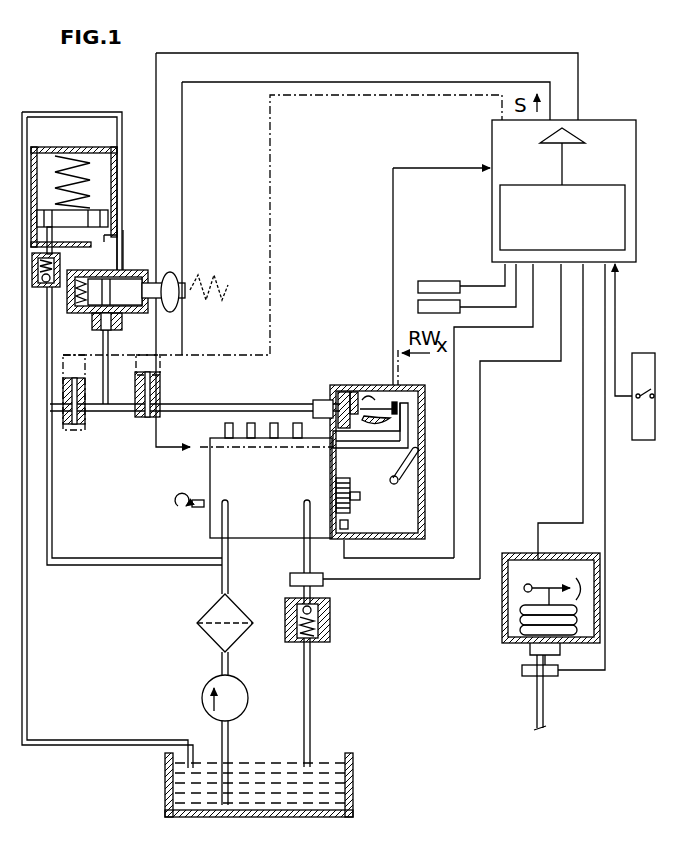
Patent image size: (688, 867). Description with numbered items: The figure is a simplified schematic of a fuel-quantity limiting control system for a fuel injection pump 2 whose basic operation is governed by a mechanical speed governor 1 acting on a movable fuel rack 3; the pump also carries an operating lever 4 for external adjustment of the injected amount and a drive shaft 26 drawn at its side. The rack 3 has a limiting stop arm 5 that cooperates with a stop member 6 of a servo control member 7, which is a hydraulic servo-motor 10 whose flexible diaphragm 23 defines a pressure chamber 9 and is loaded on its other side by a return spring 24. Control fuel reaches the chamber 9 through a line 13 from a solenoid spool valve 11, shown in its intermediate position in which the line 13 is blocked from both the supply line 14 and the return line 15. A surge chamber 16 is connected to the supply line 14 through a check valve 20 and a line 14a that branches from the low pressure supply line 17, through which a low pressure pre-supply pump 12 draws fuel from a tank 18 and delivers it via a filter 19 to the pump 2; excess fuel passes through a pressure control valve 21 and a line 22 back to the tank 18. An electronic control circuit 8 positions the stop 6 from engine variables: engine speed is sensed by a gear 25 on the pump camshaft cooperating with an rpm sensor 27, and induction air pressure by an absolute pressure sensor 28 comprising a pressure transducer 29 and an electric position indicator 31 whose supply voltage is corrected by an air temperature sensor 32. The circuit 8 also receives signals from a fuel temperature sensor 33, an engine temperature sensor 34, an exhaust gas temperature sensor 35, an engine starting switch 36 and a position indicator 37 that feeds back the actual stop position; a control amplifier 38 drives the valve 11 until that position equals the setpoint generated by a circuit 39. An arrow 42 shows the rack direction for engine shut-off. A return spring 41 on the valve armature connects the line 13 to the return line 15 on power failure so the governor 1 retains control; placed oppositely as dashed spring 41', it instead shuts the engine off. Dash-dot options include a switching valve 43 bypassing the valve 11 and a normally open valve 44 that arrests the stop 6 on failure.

The mechanical speed governor 1 is at (396, 520).
The fuel injection pump 2 is at (266, 501).
The fuel rack 3 is at (349, 450).
The operating lever 4 is at (422, 457).
The limiting stop arm 5 is at (408, 426).
The stop member 6 is at (398, 404).
The servo control member 7 is at (243, 292).
The electronic control circuit 8 is at (492, 140).
The pressure chamber 9 is at (330, 392).
The hydraulic servo-motor 10 is at (346, 390).
The solenoid valve 11 is at (143, 268).
The low pressure pre-supply pump 12 is at (202, 698).
The line 13 is at (222, 404).
The supply line 14 is at (98, 248).
The line 14a is at (52, 472).
The return line 15 is at (83, 112).
The surge chamber 16 is at (120, 192).
The low pressure supply line 17 is at (222, 580).
The tank 18 is at (165, 778).
The filter 19 is at (197, 626).
The check valve 20 is at (57, 299).
The pressure control valve 21 is at (332, 610).
The line 22 is at (312, 664).
The flexible diaphragm 23 is at (340, 392).
The return spring 24 is at (362, 392).
The gear 25 is at (336, 482).
The drive shaft 26 is at (192, 507).
The rpm sensor 27 is at (342, 538).
The absolute pressure sensor 28 is at (601, 580).
The pressure transducer 29 is at (580, 620).
The electric position indicator 31 is at (553, 585).
The sensor 32 is at (556, 677).
The fuel temperature sensor 33 is at (292, 586).
The engine temperature sensor 34 is at (420, 300).
The exhaust gas temperature sensor 35 is at (440, 281).
The engine starting switch 36 is at (641, 353).
The position indicator 37 is at (366, 392).
The control amplifier 38 is at (566, 136).
The circuit 39 is at (613, 186).
The return spring 41 is at (94, 366).
The return spring (alternative arrangement) 41' is at (218, 268).
The arrow 42 is at (240, 465).
The switching valve 43 is at (78, 438).
The 2/2-path solenoid valve 44 is at (160, 378).